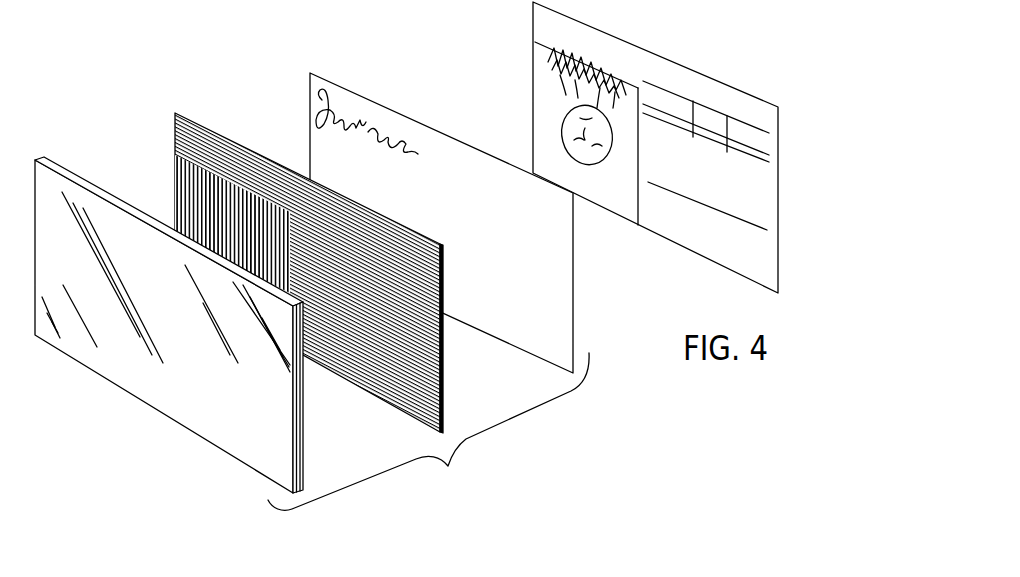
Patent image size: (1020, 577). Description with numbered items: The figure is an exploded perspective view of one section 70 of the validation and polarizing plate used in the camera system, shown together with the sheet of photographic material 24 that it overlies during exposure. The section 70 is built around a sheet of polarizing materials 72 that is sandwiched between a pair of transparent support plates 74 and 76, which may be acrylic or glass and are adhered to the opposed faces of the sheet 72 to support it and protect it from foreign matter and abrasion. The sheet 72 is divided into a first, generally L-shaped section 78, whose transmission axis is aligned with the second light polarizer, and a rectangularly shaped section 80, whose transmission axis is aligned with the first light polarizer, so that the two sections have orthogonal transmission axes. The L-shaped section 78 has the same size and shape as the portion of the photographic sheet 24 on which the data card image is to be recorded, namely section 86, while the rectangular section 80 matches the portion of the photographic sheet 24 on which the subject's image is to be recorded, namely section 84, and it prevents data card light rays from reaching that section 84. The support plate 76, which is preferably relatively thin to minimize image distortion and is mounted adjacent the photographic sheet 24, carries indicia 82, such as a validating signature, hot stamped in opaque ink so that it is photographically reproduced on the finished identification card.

The sheet of photographic material 24 is at (677, 63).
The section of the polarizing plate 70 is at (428, 431).
The sheet of polarizing materials 72 is at (236, 142).
The transparent support plate 74 is at (182, 415).
The transparent support plate 76 is at (438, 128).
The L-shaped section 78 is at (395, 402).
The rectangularly shaped section 80 is at (185, 192).
The indicia 82 is at (375, 120).
The section of the photographic sheet 84 is at (538, 90).
The section of the photographic sheet 86 is at (772, 220).